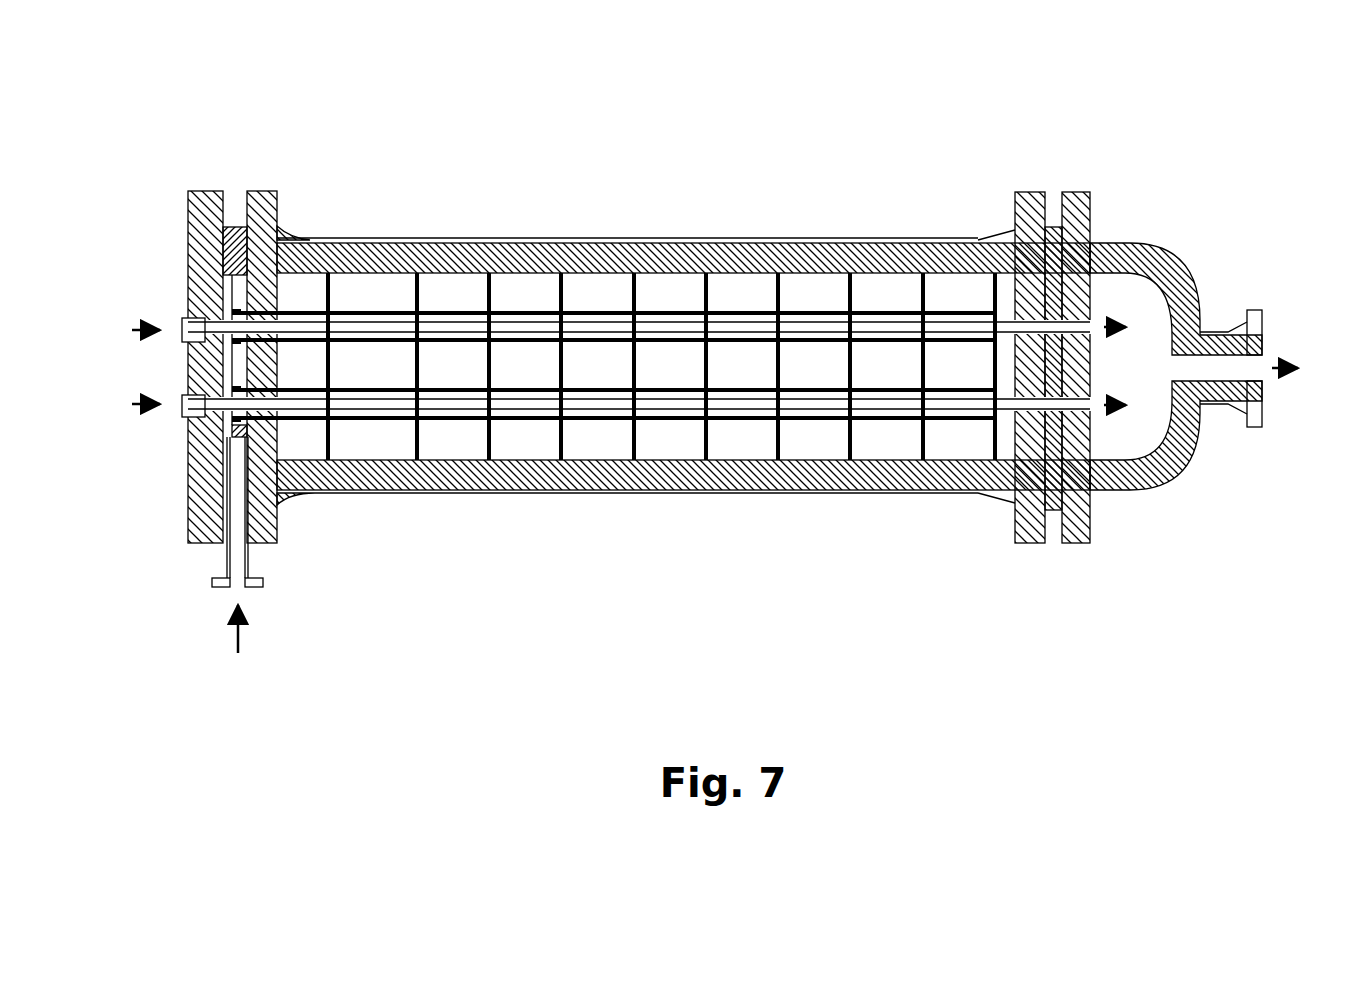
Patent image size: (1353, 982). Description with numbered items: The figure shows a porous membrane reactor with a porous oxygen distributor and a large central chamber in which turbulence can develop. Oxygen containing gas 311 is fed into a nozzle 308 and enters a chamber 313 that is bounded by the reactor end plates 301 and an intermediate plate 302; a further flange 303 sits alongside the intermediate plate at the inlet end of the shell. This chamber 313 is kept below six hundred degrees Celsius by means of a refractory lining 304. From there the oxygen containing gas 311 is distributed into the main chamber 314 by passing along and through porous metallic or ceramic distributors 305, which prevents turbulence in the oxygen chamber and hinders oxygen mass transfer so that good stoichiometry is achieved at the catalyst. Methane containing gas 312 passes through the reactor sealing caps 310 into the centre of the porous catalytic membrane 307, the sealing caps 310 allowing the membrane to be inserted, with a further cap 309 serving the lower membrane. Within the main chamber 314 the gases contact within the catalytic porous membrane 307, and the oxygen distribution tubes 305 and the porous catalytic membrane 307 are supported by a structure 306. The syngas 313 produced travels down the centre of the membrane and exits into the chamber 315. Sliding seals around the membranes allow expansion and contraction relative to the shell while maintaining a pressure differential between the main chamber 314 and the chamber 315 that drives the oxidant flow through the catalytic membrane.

The reactor end plate 301 is at (200, 192).
The intermediate plate 302 is at (240, 227).
The tube sheet flange 303 is at (257, 191).
The refractory lining 304 is at (264, 262).
The porous metallic or ceramic distributor 305 is at (348, 318).
The support structure 306 is at (458, 295).
The porous catalytic membrane 307 is at (603, 307).
The nozzle 308 is at (252, 576).
The lower tube fitting 309 is at (178, 413).
The sealing cap 310 is at (192, 343).
The oxygen containing gas 311 is at (285, 645).
The methane containing gas 312 is at (122, 361).
The oxygen chamber 313 is at (155, 248).
The main chamber 314 is at (880, 290).
The outlet chamber 315 is at (1135, 425).